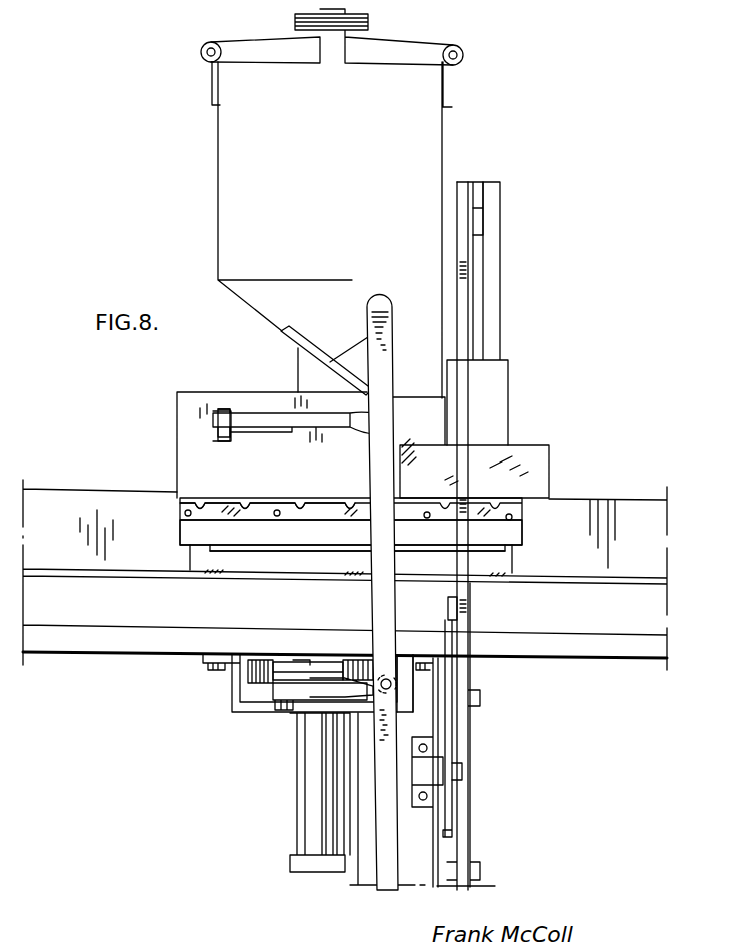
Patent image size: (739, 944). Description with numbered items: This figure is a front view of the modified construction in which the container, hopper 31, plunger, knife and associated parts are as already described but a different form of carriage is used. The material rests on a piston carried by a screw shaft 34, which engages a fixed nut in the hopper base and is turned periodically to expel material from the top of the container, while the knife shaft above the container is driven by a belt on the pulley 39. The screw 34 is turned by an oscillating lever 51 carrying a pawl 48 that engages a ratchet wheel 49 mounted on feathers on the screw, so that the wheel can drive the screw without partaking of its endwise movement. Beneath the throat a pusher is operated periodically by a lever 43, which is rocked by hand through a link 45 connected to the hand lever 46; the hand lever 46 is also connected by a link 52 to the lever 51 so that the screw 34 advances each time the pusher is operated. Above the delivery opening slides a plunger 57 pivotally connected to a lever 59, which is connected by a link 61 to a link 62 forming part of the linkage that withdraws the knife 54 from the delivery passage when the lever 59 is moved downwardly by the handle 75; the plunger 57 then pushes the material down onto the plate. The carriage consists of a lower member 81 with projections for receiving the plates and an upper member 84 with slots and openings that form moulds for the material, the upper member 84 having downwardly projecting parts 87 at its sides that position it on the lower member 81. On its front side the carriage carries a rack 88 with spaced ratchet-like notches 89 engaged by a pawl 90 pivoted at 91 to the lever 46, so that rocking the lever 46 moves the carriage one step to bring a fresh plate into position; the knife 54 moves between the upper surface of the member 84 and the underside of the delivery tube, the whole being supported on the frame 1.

The frame 1 is at (623, 506).
The hopper 31 is at (332, 230).
The screw shaft 34 is at (320, 780).
The pulley 39 is at (300, 22).
The lever 43 is at (213, 425).
The link 45 is at (258, 420).
The hand lever 46 is at (380, 356).
The pawl 48 is at (306, 672).
The ratchet wheel 49 is at (248, 673).
The oscillating lever 51 is at (285, 690).
The link 52 is at (357, 680).
The knife 54 is at (498, 489).
The plunger 57 is at (485, 302).
The lever 59 is at (483, 196).
The link 61 is at (457, 272).
The link 62 is at (468, 782).
The handle 75 is at (448, 605).
The lower member 81 is at (283, 555).
The upper member 84 is at (522, 530).
The downwardly projecting parts 87 is at (340, 535).
The rack 88 is at (182, 512).
The ratchet-like notches 89 is at (303, 513).
The pawl 90 is at (385, 515).
The pivot 91 is at (387, 456).